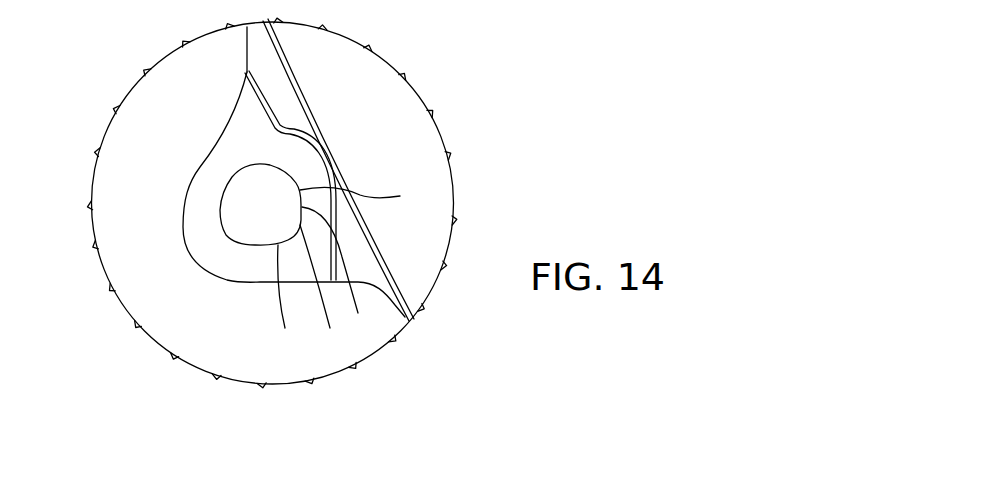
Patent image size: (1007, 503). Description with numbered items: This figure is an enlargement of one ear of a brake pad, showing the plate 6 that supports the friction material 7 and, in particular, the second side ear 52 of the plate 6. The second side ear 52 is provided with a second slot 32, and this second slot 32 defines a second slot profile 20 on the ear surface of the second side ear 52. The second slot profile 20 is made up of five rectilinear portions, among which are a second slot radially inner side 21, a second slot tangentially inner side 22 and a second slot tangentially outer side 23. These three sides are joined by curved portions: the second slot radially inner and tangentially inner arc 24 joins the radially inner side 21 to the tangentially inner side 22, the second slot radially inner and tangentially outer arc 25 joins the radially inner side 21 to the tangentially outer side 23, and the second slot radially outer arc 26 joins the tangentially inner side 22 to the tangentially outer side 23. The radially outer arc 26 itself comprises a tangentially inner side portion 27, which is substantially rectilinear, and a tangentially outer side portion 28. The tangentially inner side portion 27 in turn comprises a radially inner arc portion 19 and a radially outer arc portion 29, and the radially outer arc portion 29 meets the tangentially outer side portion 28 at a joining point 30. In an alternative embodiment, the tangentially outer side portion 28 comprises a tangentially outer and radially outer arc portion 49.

The plate 6 is at (262, 50).
The friction material 7 is at (422, 162).
The radially inner arc portion 19 is at (364, 193).
The second slot profile 20 is at (250, 212).
The second slot radially inner side 21 is at (294, 297).
The second slot tangentially inner side 22 is at (343, 271).
The second slot tangentially outer side 23 is at (218, 203).
The second slot radially inner and tangentially inner arc 24 is at (325, 288).
The second slot radially inner and tangentially outer arc 25 is at (224, 235).
The second slot radially outer arc 26 is at (282, 172).
The tangentially inner side portion 27 is at (296, 183).
The tangentially outer side portion 28 is at (245, 165).
The radially outer arc portion 29 is at (272, 163).
The joining point 30 is at (252, 163).
The second slot 32 is at (223, 228).
The tangentially outer and radially outer arc portion 49 is at (232, 170).
The second side ear 52 is at (207, 170).